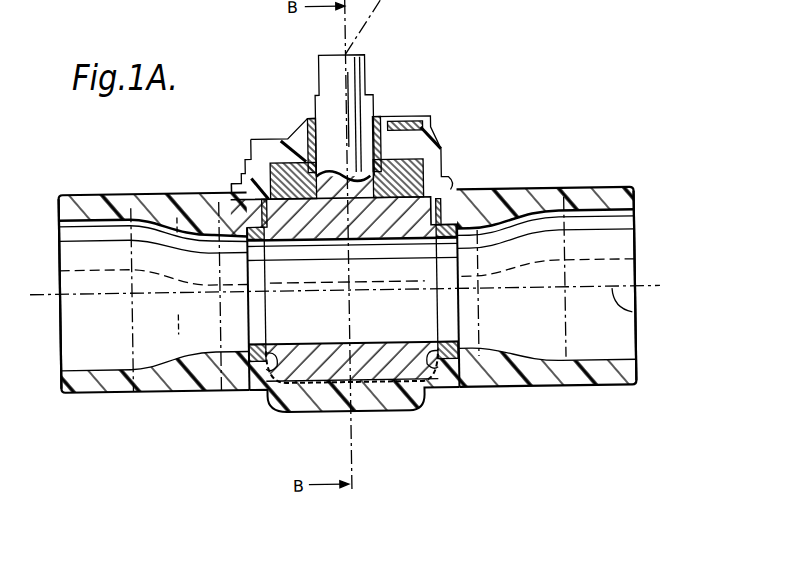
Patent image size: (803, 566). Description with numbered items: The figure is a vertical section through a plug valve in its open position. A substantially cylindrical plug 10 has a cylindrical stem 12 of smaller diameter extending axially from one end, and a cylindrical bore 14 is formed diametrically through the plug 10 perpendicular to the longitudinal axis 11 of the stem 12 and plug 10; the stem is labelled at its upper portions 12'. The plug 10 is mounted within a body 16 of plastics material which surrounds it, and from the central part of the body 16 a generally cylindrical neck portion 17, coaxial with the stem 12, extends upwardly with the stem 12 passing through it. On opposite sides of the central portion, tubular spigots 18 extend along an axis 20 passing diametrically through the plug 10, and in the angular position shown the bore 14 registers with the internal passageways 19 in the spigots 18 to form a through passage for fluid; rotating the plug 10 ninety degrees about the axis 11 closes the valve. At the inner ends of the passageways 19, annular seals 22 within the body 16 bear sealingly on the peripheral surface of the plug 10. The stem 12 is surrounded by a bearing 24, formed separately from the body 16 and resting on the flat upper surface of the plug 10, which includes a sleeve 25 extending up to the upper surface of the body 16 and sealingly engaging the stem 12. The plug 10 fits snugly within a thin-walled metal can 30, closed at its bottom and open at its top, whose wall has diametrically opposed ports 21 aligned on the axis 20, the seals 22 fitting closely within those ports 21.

The plug 10 is at (285, 367).
The longitudinal axis 11 is at (367, 27).
The stem 12 is at (323, 118).
The stem flats 12' is at (342, 103).
The bore 14 is at (322, 345).
The body 16 is at (517, 210).
The neck portion 17 is at (263, 162).
The tubular spigots 18 is at (110, 193).
The internal passageways 19 is at (122, 360).
The axis 20 is at (632, 316).
The ports 21 is at (255, 384).
The annular seals 22 is at (252, 331).
The bearing 24 is at (418, 169).
The sleeve 25 is at (386, 127).
The metal can 30 is at (438, 201).